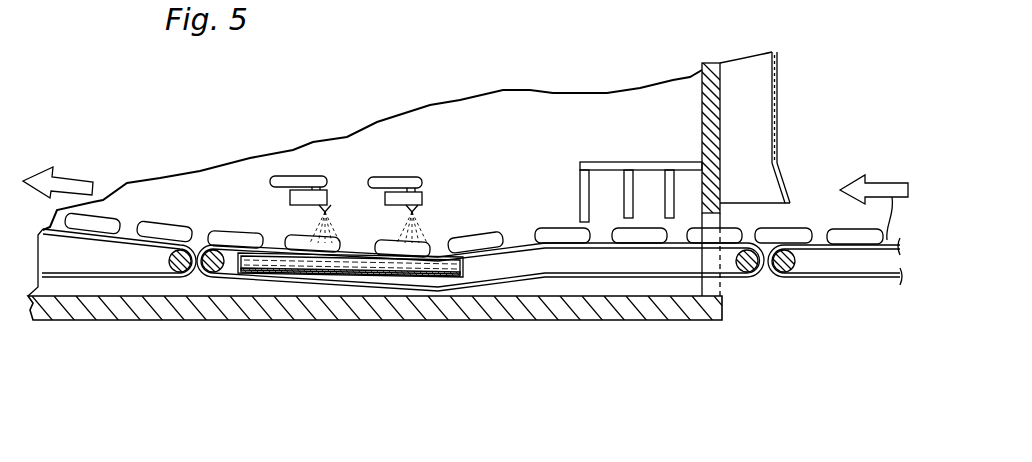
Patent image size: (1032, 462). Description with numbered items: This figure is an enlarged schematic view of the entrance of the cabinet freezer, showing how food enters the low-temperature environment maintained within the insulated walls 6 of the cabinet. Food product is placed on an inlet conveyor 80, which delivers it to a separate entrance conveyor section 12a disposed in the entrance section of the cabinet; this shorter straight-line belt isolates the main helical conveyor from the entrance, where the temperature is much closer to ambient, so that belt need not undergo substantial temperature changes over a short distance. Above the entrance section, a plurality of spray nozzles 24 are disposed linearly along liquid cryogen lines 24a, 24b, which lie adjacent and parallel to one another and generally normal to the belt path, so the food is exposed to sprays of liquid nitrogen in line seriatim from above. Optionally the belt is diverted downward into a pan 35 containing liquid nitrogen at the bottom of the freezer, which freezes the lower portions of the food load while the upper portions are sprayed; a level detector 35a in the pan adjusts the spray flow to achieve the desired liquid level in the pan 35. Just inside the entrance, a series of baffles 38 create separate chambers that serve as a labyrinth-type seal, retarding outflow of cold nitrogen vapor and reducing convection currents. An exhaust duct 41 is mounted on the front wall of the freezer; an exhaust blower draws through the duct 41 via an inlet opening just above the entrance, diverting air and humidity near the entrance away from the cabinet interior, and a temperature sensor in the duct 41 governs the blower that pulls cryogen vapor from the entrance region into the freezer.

The insulated wall 6 is at (705, 72).
The exhaust duct 41 is at (757, 105).
The baffles 38 is at (657, 187).
The spray nozzles 24 is at (358, 188).
The liquid cryogen line 24a is at (420, 176).
The liquid cryogen line 24b is at (313, 174).
The pan 35 is at (383, 312).
The level detector 35a is at (466, 278).
The entrance conveyor section 12a is at (607, 280).
The inlet conveyor 80 is at (862, 278).